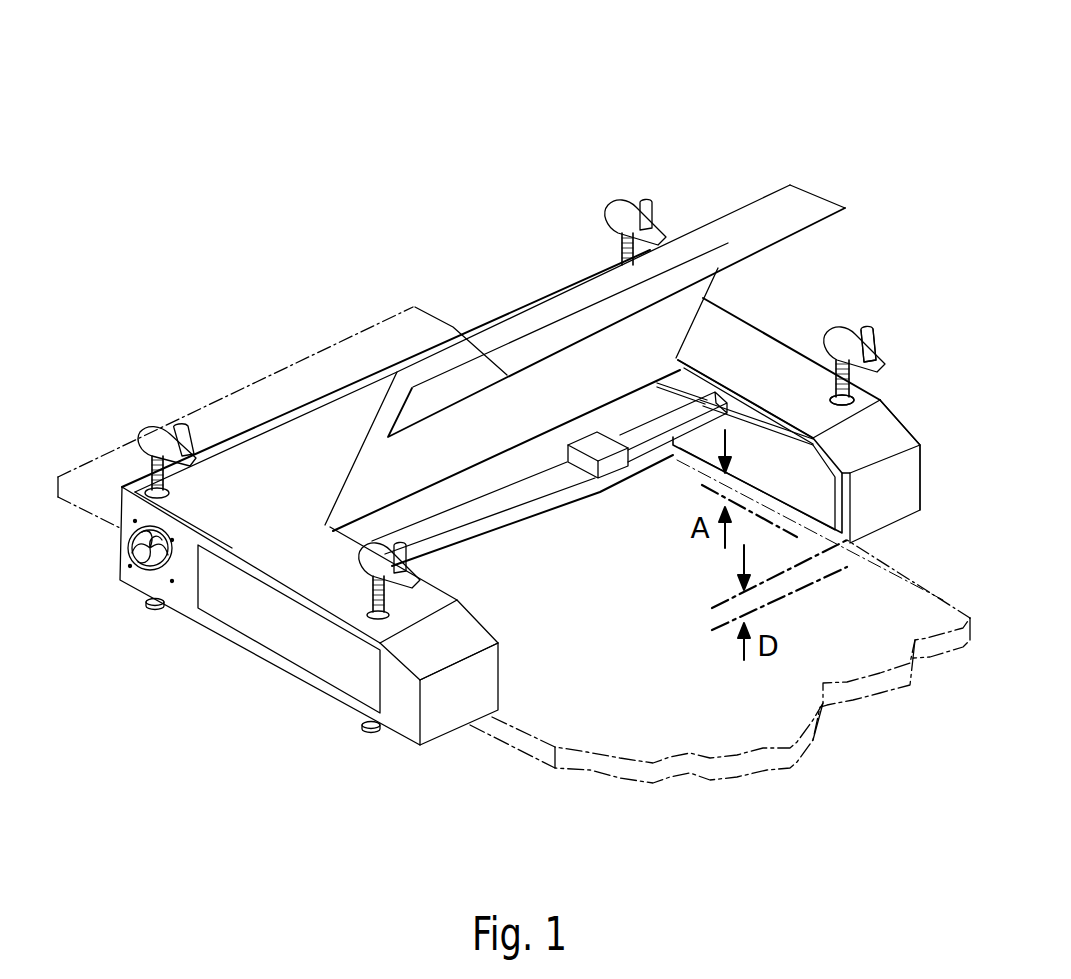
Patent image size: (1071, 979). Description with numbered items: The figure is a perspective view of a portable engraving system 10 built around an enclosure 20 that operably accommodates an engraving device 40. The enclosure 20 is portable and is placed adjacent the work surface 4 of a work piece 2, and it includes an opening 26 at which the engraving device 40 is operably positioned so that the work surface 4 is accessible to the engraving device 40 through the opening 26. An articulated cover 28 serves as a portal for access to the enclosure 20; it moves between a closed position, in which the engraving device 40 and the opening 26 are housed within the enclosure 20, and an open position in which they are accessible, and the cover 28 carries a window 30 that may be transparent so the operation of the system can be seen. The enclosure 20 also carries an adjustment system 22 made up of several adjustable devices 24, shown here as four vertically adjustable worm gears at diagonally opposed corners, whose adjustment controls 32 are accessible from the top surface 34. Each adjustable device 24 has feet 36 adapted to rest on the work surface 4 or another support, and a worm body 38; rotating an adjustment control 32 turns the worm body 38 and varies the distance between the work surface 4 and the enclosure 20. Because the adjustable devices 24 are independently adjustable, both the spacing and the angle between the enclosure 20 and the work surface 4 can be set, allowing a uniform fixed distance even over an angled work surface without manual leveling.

The work piece 2 is at (580, 771).
The work surface 4 is at (697, 692).
The portable engraving system 10 is at (567, 148).
The enclosure 20 is at (262, 418).
The adjustment system 22 is at (897, 377).
The adjustable devices 24 is at (151, 426).
The opening 26 is at (548, 532).
The articulated cover 28 is at (813, 195).
The window 30 is at (455, 378).
The adjustment control 32 is at (872, 350).
The top surface 34 is at (782, 365).
The feet 36 is at (372, 728).
The worm body 38 is at (834, 386).
The engraving device 40 is at (590, 455).